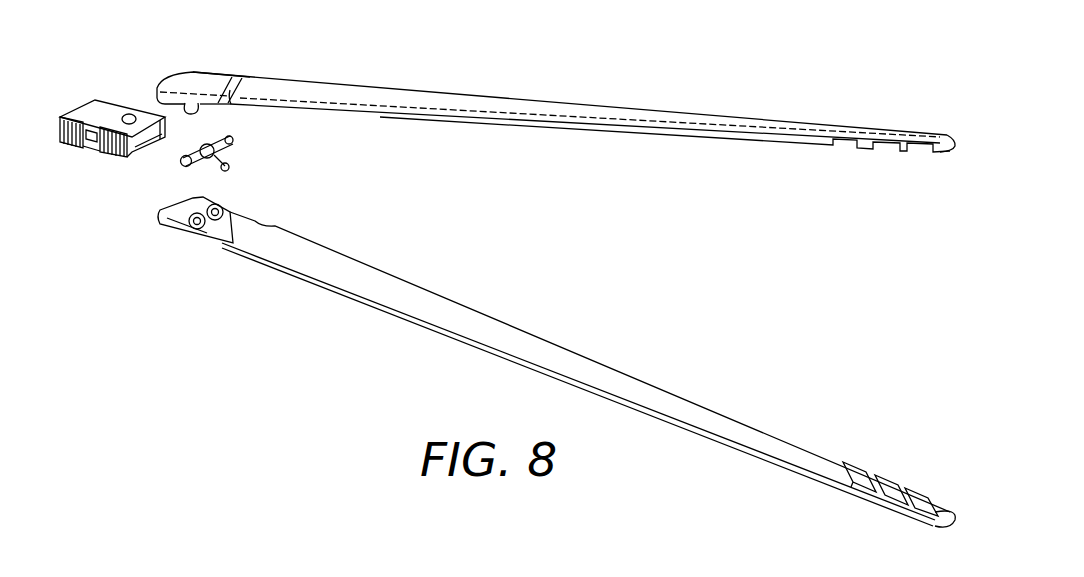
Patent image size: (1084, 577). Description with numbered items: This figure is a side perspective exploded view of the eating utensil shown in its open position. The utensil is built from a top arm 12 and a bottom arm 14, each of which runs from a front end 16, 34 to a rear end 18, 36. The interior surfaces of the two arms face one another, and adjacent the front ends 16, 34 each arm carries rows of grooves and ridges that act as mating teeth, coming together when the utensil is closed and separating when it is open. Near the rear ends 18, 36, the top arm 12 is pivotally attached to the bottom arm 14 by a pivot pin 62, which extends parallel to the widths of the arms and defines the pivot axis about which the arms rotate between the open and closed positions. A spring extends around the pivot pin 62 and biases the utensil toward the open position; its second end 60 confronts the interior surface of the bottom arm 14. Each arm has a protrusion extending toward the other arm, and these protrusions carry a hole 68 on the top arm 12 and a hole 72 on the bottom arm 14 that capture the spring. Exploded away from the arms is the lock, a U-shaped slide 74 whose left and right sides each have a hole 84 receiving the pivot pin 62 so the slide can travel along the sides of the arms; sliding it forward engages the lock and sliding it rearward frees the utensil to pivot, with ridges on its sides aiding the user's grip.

The top arm 12 is at (677, 112).
The bottom arm 14 is at (580, 388).
The front end 16 is at (955, 132).
The rear end 18 is at (168, 82).
The front end 34 is at (943, 527).
The rear end 36 is at (174, 236).
The second end 60 is at (217, 175).
The pivot pin 62 is at (181, 160).
The hole 68 is at (192, 101).
The hole 72 is at (221, 202).
The U-shaped slide 74 is at (103, 105).
The hole 84 is at (79, 89).